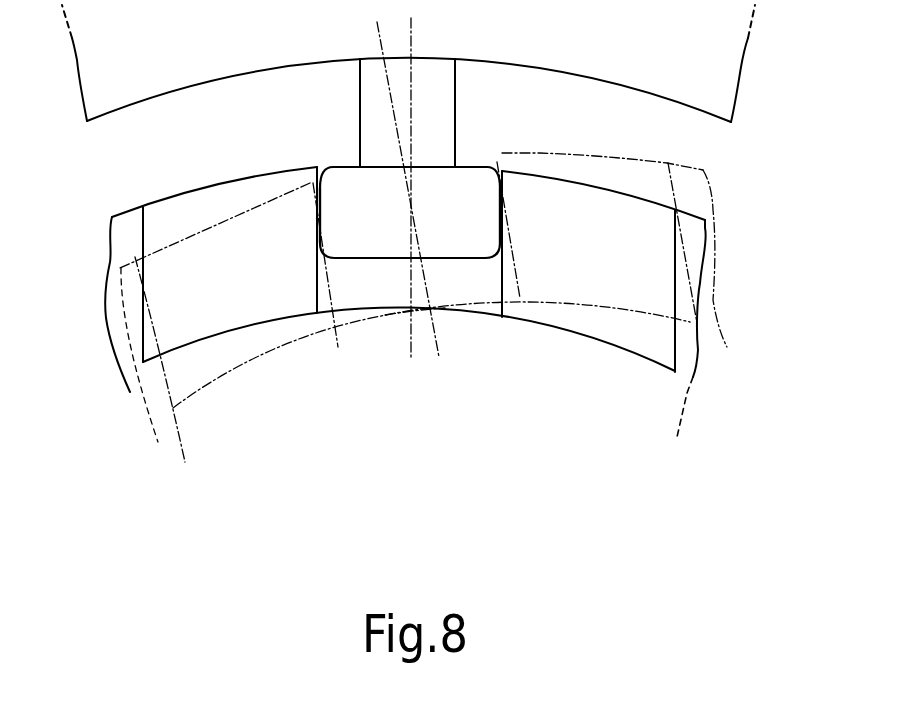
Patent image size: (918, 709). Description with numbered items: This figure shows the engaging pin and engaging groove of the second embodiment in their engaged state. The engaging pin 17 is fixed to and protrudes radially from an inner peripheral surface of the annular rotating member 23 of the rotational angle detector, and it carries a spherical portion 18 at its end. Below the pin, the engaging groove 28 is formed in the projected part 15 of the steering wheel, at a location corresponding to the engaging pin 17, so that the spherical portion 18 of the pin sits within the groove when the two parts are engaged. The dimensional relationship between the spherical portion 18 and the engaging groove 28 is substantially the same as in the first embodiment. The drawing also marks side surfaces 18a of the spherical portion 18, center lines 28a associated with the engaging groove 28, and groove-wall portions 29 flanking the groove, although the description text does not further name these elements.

The projected part 15 is at (685, 365).
The engaging pin 17 is at (455, 107).
The spherical portion 18 is at (353, 155).
The abutment surface 18a is at (320, 255).
The annular rotating member 23 is at (718, 97).
The engaging groove 28 is at (439, 323).
The center line 28a is at (318, 293).
The brake shoe web end 29 is at (198, 330).